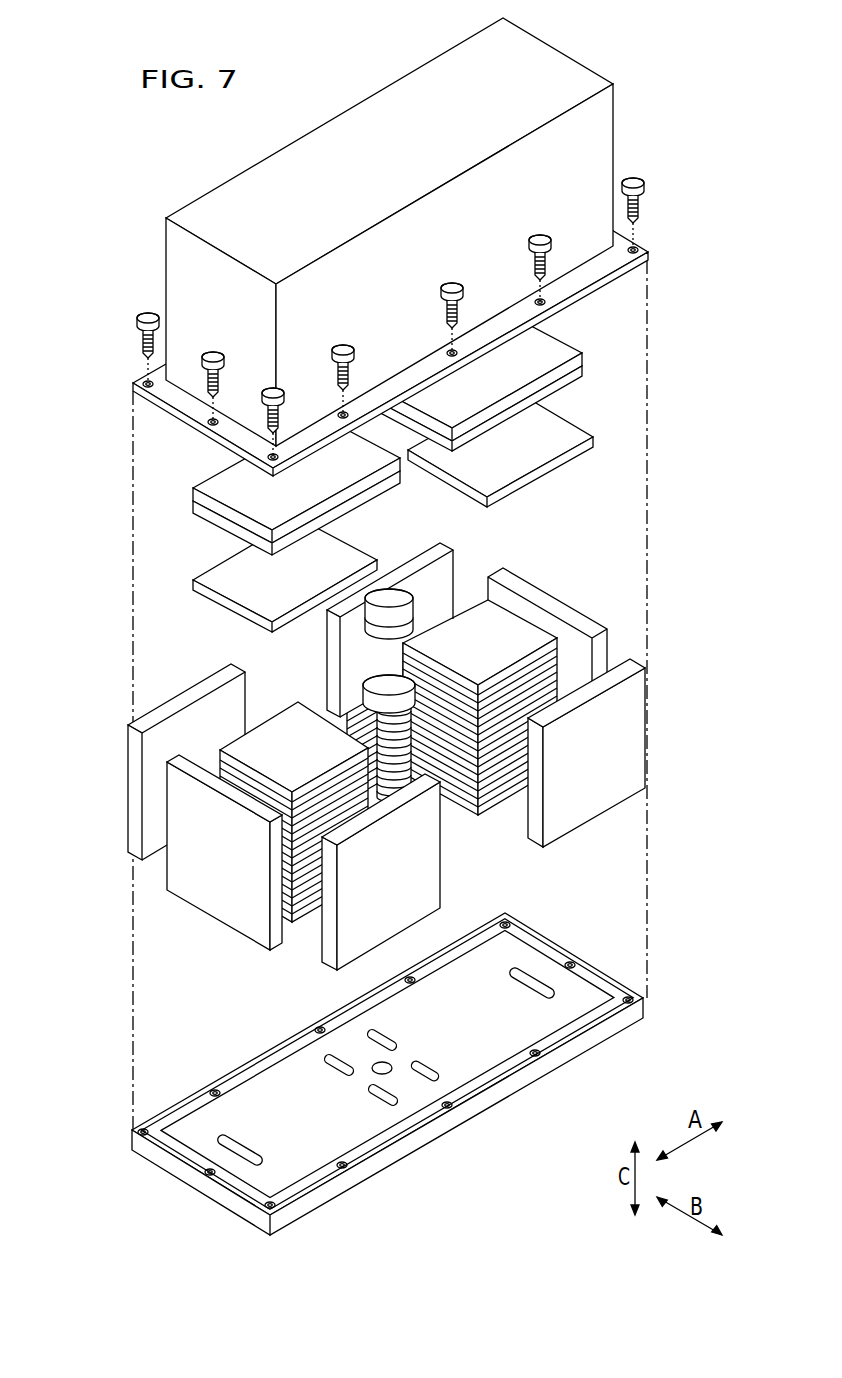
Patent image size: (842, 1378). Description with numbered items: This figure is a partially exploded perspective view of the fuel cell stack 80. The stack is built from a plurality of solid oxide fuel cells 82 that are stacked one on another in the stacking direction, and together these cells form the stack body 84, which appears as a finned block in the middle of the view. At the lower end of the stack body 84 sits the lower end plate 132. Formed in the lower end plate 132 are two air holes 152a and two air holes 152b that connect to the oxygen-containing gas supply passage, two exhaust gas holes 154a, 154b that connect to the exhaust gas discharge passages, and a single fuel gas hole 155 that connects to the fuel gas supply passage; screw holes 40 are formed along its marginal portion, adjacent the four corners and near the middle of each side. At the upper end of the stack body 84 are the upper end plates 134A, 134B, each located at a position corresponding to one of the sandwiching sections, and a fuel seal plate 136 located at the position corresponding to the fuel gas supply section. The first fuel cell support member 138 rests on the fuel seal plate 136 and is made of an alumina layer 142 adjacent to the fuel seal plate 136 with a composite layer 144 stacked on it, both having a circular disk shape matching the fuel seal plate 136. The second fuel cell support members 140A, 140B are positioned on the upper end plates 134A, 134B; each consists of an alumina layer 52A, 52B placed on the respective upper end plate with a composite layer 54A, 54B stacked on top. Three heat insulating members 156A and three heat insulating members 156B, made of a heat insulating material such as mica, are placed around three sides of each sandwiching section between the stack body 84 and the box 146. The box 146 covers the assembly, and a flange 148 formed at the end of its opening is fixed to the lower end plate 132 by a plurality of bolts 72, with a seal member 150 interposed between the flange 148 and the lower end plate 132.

The fuel cell stack 80 is at (684, 81).
The bolts 72 is at (648, 184).
The box 146 is at (166, 247).
The flange 148 is at (185, 405).
The second fuel cell support member 140A is at (573, 381).
The composite layer 54A is at (572, 344).
The alumina layer 52A is at (584, 373).
The upper end plate 134A is at (575, 432).
The second fuel cell support member 140B is at (209, 485).
The composite layer 54B is at (220, 483).
The alumina layer 52B is at (220, 516).
The upper end plate 134B is at (215, 575).
The heat insulating members 156A is at (405, 567).
The heat insulating members 156B is at (178, 702).
The composite layer 144 is at (410, 593).
The alumina layer 142 is at (418, 617).
The first fuel cell support member 138 is at (463, 575).
The stack body 84 is at (415, 725).
The fuel seal plate 136 is at (378, 681).
The solid oxide fuel cells 82 is at (504, 773).
The seal member 150 is at (548, 948).
The exhaust gas hole 154a is at (547, 992).
The exhaust gas hole 154b is at (248, 1155).
The air holes 152a is at (395, 1102).
The air holes 152b is at (330, 1055).
The fuel gas hole 155 is at (386, 1061).
The screw holes 40 is at (533, 1047).
The lower end plate 132 is at (381, 1062).